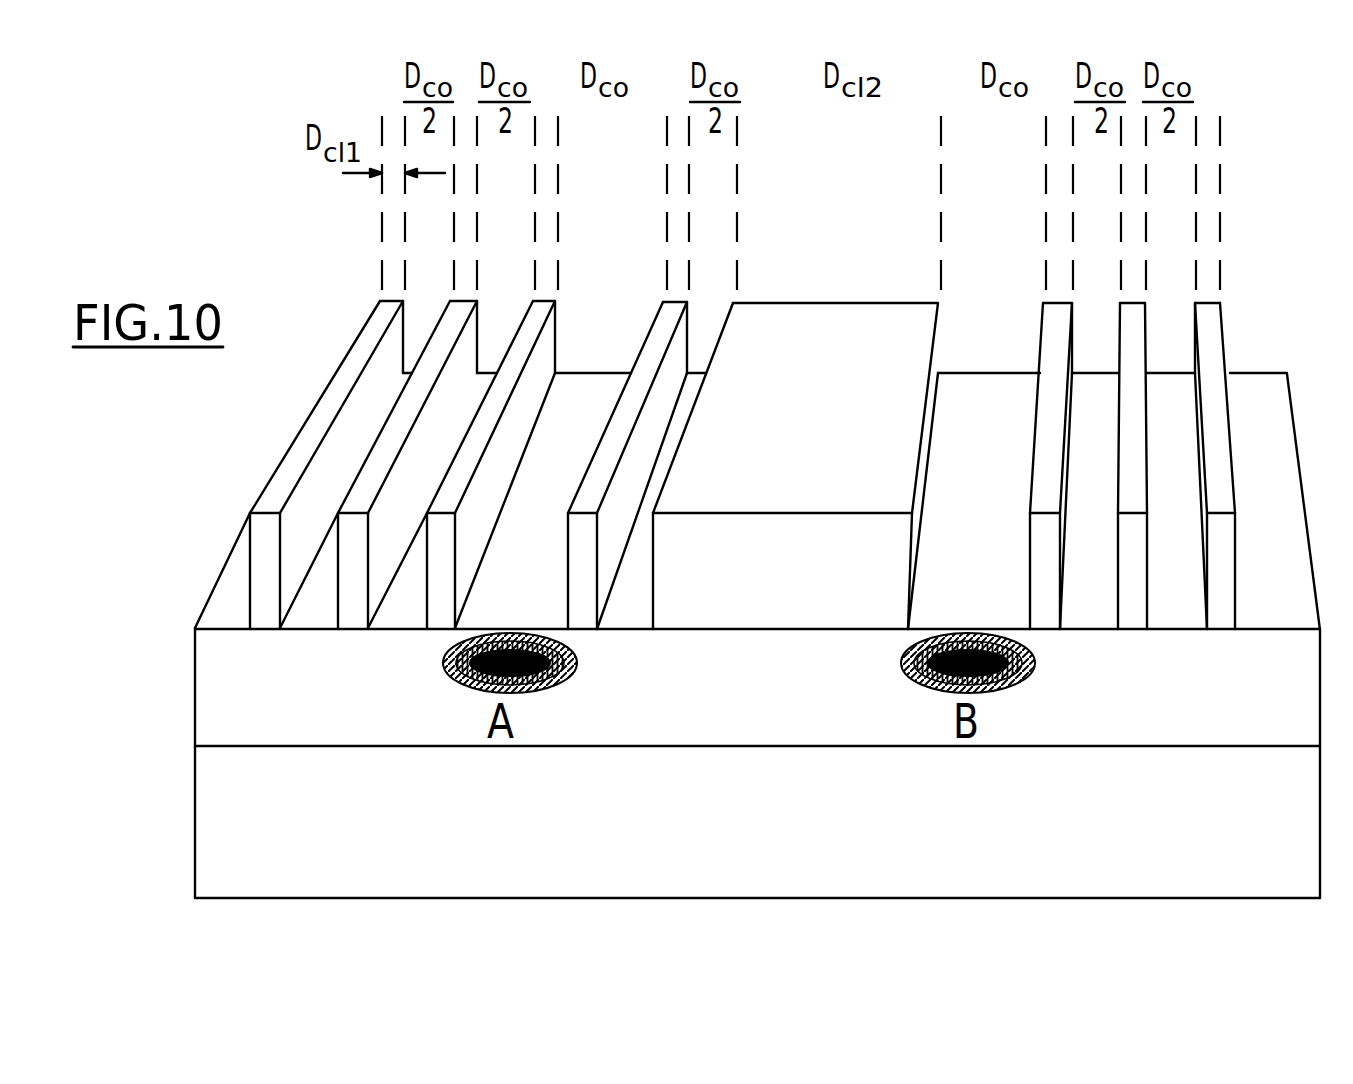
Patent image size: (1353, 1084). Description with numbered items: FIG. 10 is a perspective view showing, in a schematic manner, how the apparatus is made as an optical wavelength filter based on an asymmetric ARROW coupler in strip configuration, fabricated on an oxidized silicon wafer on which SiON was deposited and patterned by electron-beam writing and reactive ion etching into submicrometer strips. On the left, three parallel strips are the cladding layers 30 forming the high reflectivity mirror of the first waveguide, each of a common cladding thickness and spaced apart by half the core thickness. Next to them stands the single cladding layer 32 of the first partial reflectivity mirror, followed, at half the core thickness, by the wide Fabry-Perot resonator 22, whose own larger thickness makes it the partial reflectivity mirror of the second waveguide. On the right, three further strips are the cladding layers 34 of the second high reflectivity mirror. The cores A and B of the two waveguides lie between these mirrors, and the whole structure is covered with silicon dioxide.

The Fabry-Perot resonator 22 is at (898, 322).
The cladding layers 30 is at (449, 500).
The cladding layer 32 is at (665, 330).
The cladding layers 34 is at (1047, 405).